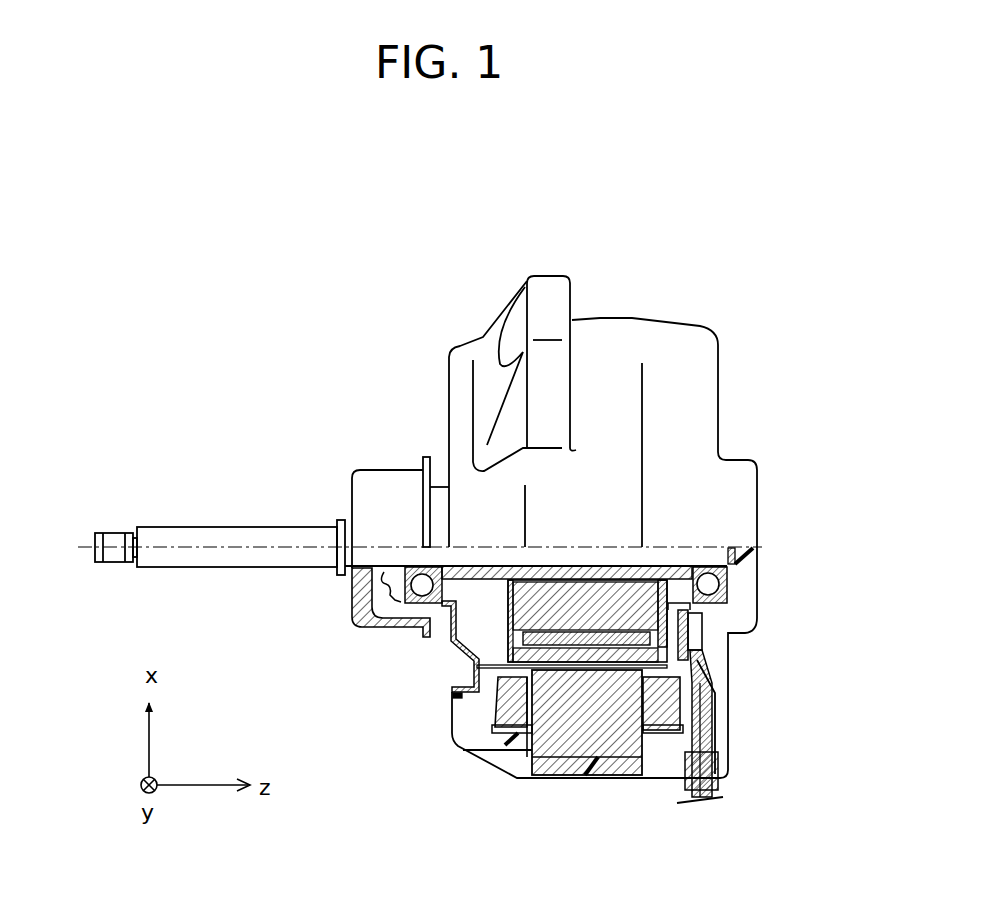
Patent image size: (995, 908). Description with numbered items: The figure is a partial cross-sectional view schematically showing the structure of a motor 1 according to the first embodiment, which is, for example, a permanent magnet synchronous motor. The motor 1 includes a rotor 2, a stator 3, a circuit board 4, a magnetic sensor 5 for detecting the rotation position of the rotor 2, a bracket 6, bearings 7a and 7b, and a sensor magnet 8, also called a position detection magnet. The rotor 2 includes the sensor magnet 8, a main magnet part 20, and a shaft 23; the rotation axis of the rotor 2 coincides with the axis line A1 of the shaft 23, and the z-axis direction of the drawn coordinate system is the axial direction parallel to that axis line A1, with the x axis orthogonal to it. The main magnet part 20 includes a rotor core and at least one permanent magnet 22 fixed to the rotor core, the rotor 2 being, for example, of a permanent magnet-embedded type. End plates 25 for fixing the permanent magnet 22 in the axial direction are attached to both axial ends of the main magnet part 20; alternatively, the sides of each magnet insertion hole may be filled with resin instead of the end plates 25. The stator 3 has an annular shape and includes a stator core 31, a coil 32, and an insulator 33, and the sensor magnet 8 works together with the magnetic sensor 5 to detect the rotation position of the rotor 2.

The motor 1 is at (392, 289).
The rotor 2 is at (492, 626).
The stator 3 is at (659, 366).
The circuit board 4 is at (693, 638).
The magnetic sensor 5 is at (685, 626).
The bracket 6 is at (500, 680).
The bearing 7a is at (408, 604).
The bearing 7b is at (730, 581).
The sensor magnet 8 is at (663, 617).
The main magnet part 20 is at (512, 598).
The permanent magnet 22 is at (594, 640).
The shaft 23 is at (263, 537).
The end plate 25 is at (506, 630).
The stator core 31 is at (565, 736).
The coil 32 is at (507, 736).
The insulator 33 is at (527, 740).
The axis line A1 is at (215, 550).